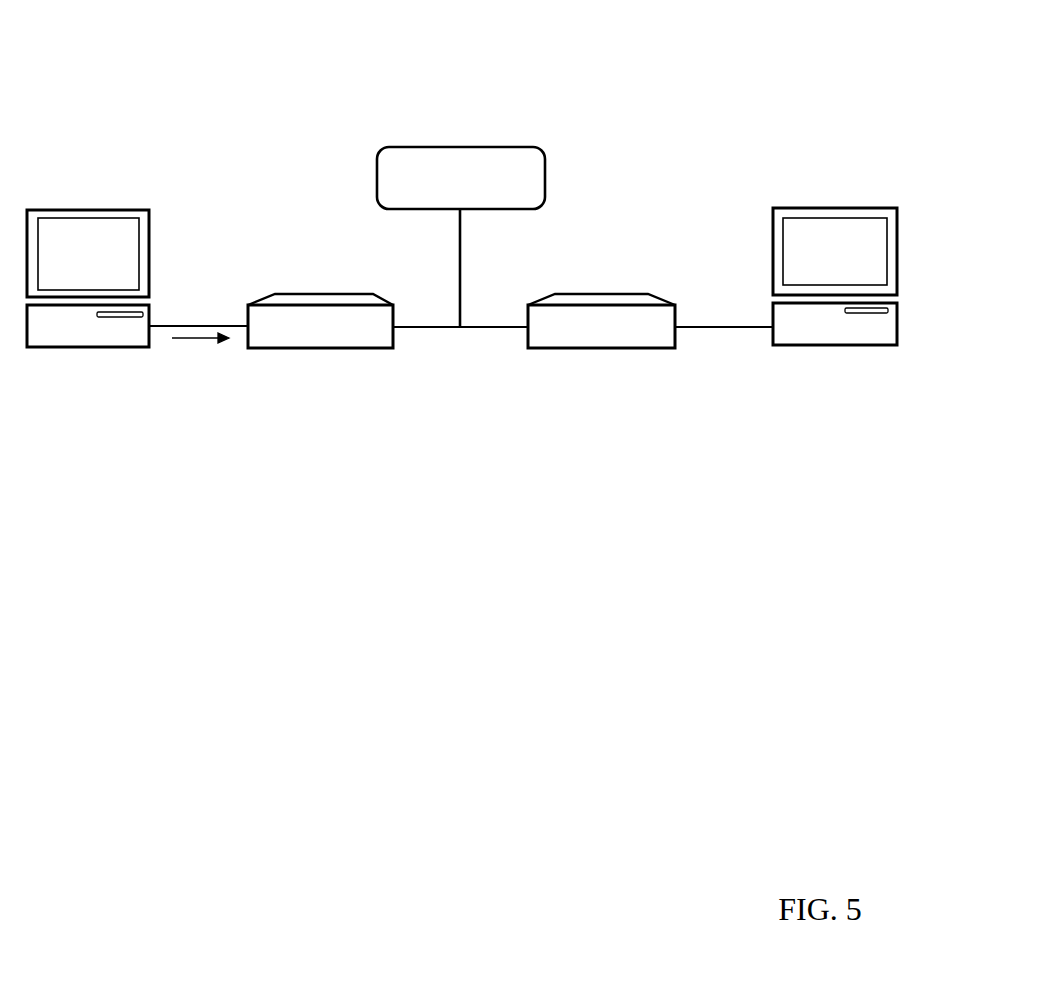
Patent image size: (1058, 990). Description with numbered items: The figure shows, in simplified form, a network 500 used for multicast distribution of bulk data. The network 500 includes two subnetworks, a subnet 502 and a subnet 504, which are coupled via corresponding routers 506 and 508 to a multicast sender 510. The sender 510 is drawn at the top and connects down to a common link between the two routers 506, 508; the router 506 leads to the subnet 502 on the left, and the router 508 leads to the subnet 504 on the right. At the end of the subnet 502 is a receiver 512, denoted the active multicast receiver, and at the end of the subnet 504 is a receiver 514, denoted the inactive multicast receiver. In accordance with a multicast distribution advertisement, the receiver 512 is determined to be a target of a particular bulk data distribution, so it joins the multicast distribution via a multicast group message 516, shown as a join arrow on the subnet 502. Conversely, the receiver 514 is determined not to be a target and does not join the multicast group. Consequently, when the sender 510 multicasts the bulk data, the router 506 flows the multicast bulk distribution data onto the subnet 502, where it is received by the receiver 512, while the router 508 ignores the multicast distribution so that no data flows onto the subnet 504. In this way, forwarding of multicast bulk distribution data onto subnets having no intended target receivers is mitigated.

The network 500 is at (308, 112).
The subnet 502 is at (187, 322).
The subnet 504 is at (729, 322).
The router 506 is at (320, 348).
The router 508 is at (600, 348).
The multicast sender 510 is at (545, 177).
The active multicast receiver 512 is at (87, 347).
The inactive multicast receiver 514 is at (835, 345).
The multicast group message 516 is at (183, 341).